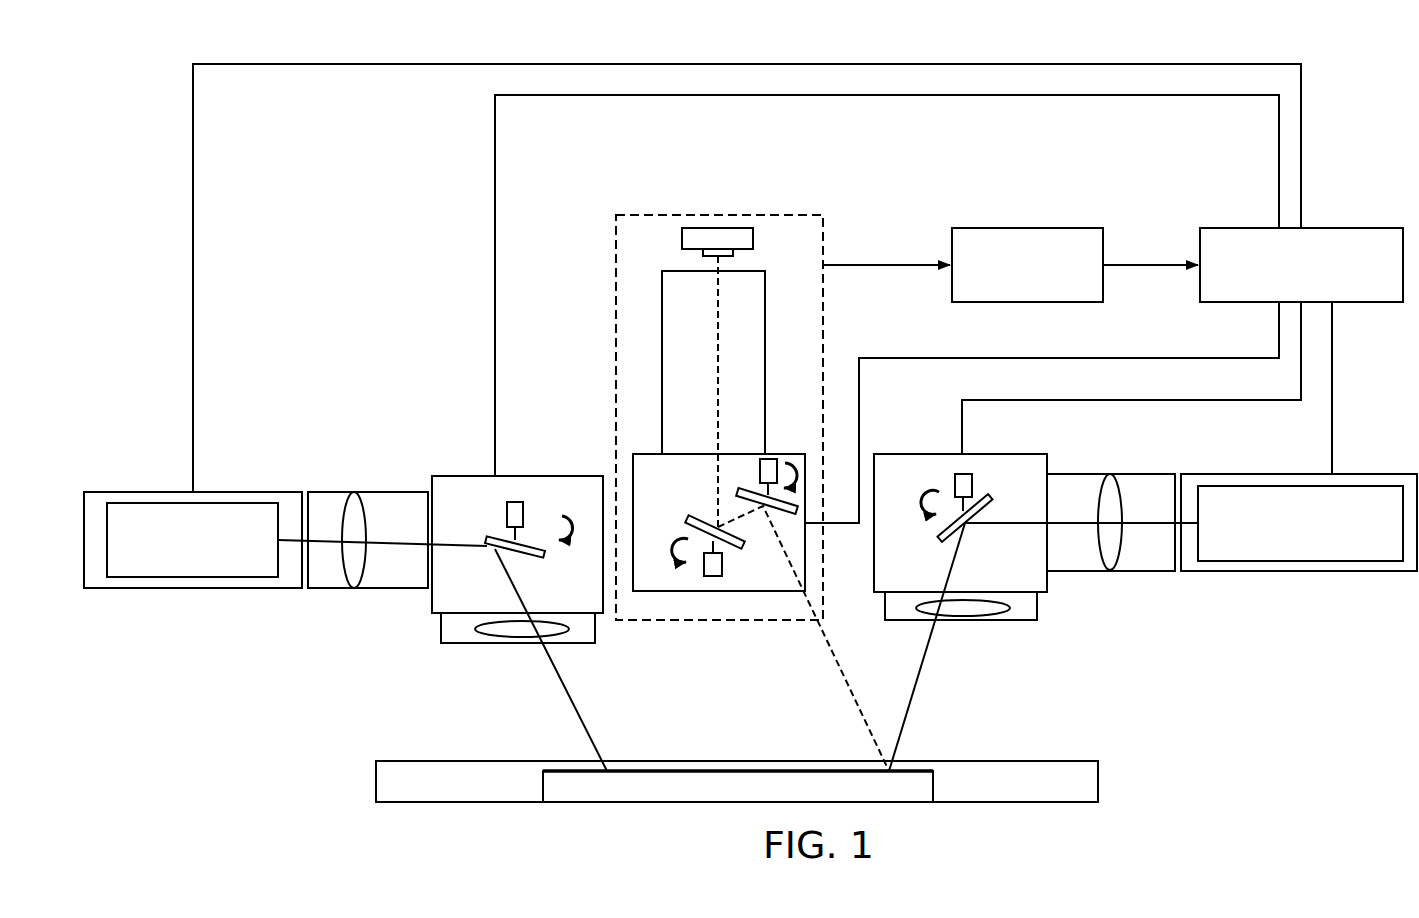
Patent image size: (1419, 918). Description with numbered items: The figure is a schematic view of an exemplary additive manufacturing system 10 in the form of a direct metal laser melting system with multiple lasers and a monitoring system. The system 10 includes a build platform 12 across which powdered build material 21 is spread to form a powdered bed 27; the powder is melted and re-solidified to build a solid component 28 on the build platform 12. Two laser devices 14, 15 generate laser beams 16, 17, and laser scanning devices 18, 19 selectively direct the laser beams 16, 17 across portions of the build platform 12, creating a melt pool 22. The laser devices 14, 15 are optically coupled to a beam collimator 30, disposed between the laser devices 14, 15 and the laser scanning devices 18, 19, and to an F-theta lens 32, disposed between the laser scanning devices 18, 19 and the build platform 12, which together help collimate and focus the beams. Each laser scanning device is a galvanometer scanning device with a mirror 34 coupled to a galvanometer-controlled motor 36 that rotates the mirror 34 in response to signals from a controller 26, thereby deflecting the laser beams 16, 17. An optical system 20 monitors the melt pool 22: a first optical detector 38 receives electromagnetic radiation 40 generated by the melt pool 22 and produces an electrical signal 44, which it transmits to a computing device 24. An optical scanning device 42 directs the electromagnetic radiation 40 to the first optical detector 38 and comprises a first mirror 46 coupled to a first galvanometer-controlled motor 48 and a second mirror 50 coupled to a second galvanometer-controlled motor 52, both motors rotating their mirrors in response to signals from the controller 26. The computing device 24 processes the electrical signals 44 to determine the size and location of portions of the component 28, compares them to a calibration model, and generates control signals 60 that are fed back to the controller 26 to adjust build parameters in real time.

The additive manufacturing system 10 is at (640, 168).
The build platform 12 is at (1074, 761).
The laser device 14 is at (1375, 487).
The laser device 15 is at (250, 503).
The laser beam 16 is at (1155, 525).
The laser beam 17 is at (288, 545).
The laser scanning device 18 is at (884, 454).
The laser scanning device 19 is at (450, 476).
The optical system 20 is at (605, 232).
The powdered build material 21 is at (1010, 771).
The melt pool 22 is at (610, 768).
The computing device 24 is at (1025, 228).
The controller 26 is at (1342, 228).
The powdered bed 27 is at (805, 771).
The solid component 28 is at (716, 780).
The beam collimator 30 is at (352, 588).
The F-theta lens 32 is at (520, 642).
The mirror 34 is at (533, 546).
The galvanometer-controlled motor 36 is at (515, 502).
The first optical detector 38 is at (716, 228).
The electromagnetic radiation 40 is at (835, 662).
The optical scanning device 42 is at (636, 454).
The electrical signal 44 is at (885, 262).
The first mirror 46 is at (732, 500).
The first galvanometer-controlled motor 48 is at (770, 455).
The second mirror 50 is at (700, 520).
The second galvanometer-controlled motor 52 is at (712, 582).
The control signal 60 is at (1150, 262).